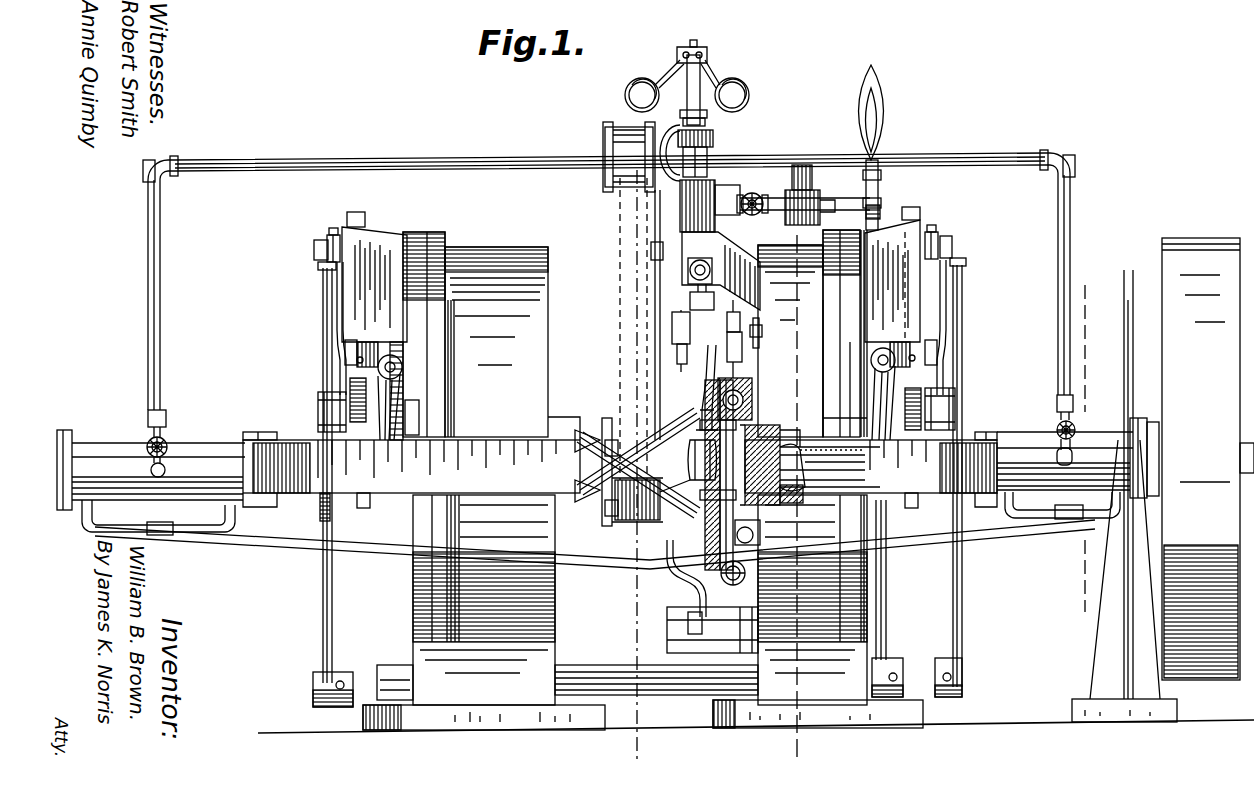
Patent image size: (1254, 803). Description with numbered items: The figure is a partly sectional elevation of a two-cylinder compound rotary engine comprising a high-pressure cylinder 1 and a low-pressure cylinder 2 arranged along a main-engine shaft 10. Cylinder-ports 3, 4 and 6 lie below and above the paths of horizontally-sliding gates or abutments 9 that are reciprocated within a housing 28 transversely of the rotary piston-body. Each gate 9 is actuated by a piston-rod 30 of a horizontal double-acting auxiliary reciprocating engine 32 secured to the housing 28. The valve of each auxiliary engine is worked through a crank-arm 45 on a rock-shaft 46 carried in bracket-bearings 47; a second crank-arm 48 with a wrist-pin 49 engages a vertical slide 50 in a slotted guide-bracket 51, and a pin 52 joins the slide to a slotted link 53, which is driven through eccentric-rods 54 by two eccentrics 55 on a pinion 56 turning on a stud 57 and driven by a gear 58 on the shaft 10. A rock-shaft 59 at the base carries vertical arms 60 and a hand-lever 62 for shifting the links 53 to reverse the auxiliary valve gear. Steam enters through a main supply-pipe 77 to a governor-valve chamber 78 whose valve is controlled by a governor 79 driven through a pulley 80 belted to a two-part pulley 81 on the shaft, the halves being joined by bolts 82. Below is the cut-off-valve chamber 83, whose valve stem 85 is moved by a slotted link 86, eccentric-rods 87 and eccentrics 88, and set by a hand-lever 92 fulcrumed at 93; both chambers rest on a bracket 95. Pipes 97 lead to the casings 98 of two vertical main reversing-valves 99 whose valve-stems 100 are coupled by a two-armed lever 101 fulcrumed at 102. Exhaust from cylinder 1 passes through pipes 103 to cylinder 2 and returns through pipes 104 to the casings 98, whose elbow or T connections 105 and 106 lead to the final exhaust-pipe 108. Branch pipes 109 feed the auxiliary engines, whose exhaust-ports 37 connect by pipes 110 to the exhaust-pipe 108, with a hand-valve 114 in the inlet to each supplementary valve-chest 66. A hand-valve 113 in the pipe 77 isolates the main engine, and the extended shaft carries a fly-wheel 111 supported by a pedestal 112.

The high-pressure cylinder 1 is at (794, 305).
The low-pressure cylinder 2 is at (501, 468).
The cylinder-port 3 is at (785, 510).
The cylinder-port 4 is at (797, 244).
The cylinder-port 6 is at (790, 435).
The sliding gate or abutment 9 is at (805, 465).
The main-engine shaft 10 is at (679, 489).
The housing 28 is at (620, 469).
The piston-rod 30 is at (882, 455).
The auxiliary reciprocating engine 32 is at (655, 463).
The exhaust-port 37 is at (96, 520).
The crank-arm 45 is at (628, 403).
The rock-shaft 46 is at (378, 372).
The bracket-bearing 47 is at (856, 357).
The crank-arm 48 is at (366, 348).
The wrist-pin 49 is at (357, 367).
The vertical slide 50 is at (345, 352).
The guide-bracket 51 is at (631, 274).
The pin 52 is at (333, 235).
The slotted link 53 is at (314, 244).
The eccentric-rod 54 is at (337, 330).
The eccentric 55 is at (318, 415).
The pinion 56 is at (350, 392).
The stud 57 is at (858, 412).
The gear 58 is at (360, 510).
The rock-shaft 59 is at (382, 672).
The vertical arm 60 is at (322, 283).
The hand-lever 62 is at (878, 190).
The supplementary valve-chest 66 is at (138, 472).
The main supply-pipe 77 is at (828, 210).
The governor-valve chamber 78 is at (710, 206).
The governor 79 is at (701, 83).
The pulley 80 is at (658, 281).
The pulley 81 is at (607, 418).
The bolt 82 is at (605, 440).
The cut-off-valve chamber 83 is at (721, 271).
The stem 85 is at (714, 300).
The slotted link 86 is at (690, 331).
The eccentric-rod 87 is at (700, 370).
The eccentric 88 is at (698, 393).
The hand-lever 92 is at (660, 301).
The fulcrum 93 is at (688, 640).
The bracket 95 is at (740, 272).
The pipe 97 is at (712, 270).
The reversing-valve casing 98 is at (705, 544).
The main reversing-valve 99 is at (755, 430).
The valve-stem 100 is at (742, 358).
The two-armed lever 101 is at (727, 326).
The fulcrum 102 is at (759, 330).
The pipe 103 is at (637, 463).
The pipe 104 is at (634, 522).
The elbow or T connection 105 is at (752, 393).
The elbow or T connection 106 is at (760, 536).
The final exhaust-pipe 108 is at (728, 586).
The branch pipe 109 is at (1058, 391).
The pipe 110 is at (935, 543).
The fly-wheel 111 is at (1201, 459).
The pedestal 112 is at (1098, 663).
The hand-valve 113 is at (802, 193).
The hand-valve 114 is at (167, 448).